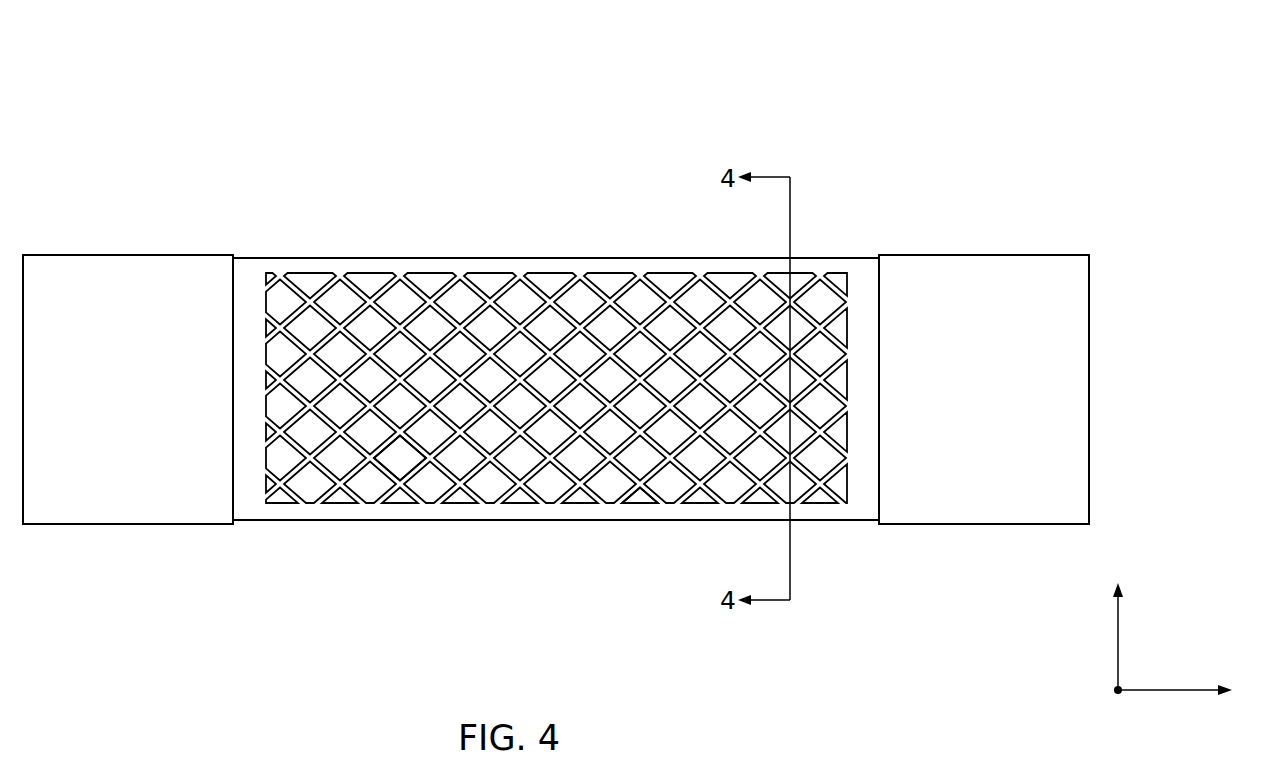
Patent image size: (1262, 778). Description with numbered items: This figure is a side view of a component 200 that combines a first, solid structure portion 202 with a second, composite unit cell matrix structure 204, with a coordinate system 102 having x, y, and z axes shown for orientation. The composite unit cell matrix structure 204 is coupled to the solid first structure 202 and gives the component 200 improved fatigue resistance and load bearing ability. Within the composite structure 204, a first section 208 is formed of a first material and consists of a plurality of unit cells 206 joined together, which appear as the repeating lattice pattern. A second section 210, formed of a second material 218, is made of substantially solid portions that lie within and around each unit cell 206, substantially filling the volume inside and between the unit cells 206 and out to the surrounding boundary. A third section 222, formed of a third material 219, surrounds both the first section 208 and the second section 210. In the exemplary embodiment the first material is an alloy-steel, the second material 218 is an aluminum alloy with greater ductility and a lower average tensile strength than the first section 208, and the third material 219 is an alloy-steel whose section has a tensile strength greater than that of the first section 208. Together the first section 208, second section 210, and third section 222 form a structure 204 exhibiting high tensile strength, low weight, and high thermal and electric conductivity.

The component 200 is at (186, 60).
The first, solid structure portion 202 is at (121, 504).
The second, composite unit cell matrix structure 204 is at (388, 182).
The second section 210 is at (288, 258).
The second material 218 is at (375, 290).
The third section 222 is at (518, 258).
The third material 219 is at (620, 258).
The unit cells 206 is at (430, 463).
The first section 208 is at (651, 492).
The coordinate system 102 is at (1092, 618).